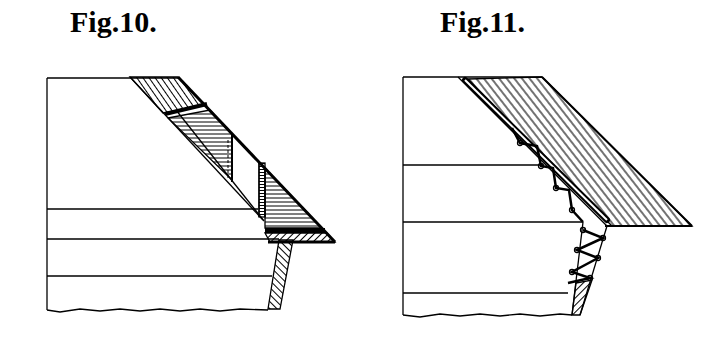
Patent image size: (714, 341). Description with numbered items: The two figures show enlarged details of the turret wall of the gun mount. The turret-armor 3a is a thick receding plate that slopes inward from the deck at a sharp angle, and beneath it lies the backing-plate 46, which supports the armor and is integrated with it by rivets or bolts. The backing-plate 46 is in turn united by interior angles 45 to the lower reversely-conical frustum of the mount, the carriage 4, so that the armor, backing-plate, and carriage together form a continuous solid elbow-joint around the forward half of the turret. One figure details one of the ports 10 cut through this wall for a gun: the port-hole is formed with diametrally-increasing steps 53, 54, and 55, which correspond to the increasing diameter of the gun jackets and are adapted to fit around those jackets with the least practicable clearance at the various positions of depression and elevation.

In FIG. 10, the turret-armor 3a is at (178, 85).
In FIG. 11, the turret-armor 3a is at (586, 128).
In FIG. 10, the carriage 4 is at (278, 292).
In FIG. 11, the carriage 4 is at (585, 302).
In FIG. 10, the port 10 is at (201, 160).
In FIG. 10, the interior angles 45 is at (163, 195).
In FIG. 11, the interior angles 45 is at (493, 197).
In FIG. 11, the backing-plate 46 is at (503, 118).
In FIG. 10, the step 53 is at (294, 198).
In FIG. 10, the step 54 is at (262, 166).
In FIG. 10, the step 55 is at (227, 125).